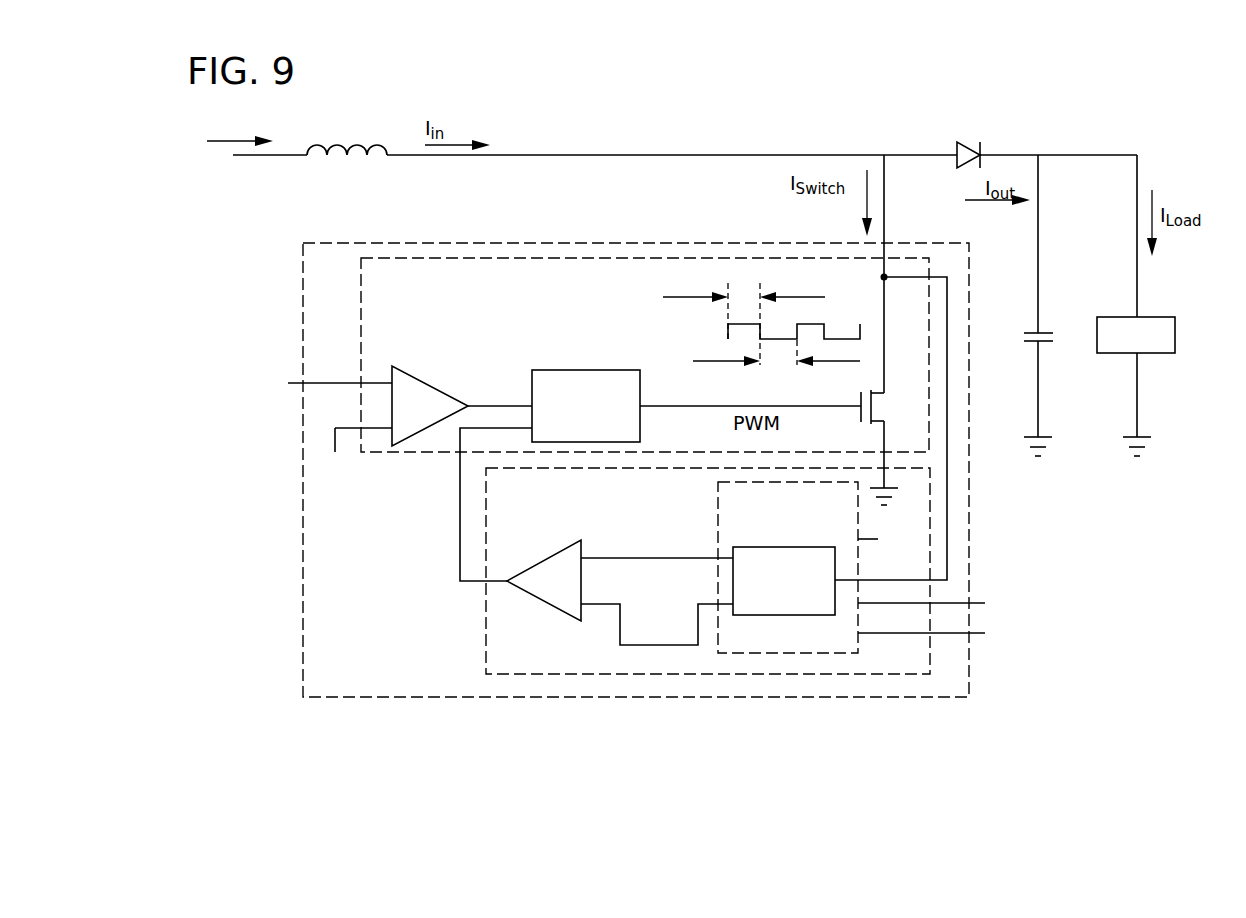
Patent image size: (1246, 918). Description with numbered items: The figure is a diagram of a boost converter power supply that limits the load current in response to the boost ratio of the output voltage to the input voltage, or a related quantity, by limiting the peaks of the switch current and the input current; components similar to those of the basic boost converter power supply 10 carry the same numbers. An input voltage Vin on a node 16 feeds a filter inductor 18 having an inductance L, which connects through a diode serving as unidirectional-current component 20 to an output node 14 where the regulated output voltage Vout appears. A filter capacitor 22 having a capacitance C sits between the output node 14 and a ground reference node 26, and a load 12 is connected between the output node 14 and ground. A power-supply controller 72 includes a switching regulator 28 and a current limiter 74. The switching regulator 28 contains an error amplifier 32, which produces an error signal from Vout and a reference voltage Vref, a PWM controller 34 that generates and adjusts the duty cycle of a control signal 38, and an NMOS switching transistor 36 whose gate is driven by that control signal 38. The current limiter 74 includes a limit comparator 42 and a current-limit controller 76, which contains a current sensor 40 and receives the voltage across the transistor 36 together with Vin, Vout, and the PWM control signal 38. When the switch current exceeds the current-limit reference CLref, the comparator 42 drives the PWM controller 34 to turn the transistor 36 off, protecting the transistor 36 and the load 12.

The boost converter power supply 10 is at (1111, 665).
The load 12 is at (1115, 353).
The node 14 is at (1137, 155).
The node 16 is at (233, 155).
The filter inductor 18 is at (346, 143).
The unidirectional-current component 20 is at (964, 145).
The filter capacitor 22 is at (1045, 333).
The reference node 26 is at (1045, 437).
The switching regulator 28 is at (360, 300).
The error amplifier 32 is at (435, 381).
The pulse-width-modulation (PWM) controller 34 is at (562, 370).
The NMOS switching transistor 36 is at (871, 422).
The control signal 38 is at (812, 324).
The current sensor 40 is at (776, 547).
The limit comparator 42 is at (582, 549).
The power-supply controller 72 is at (970, 368).
The current limiter 74 is at (486, 497).
The current-limit controller 76 is at (718, 497).